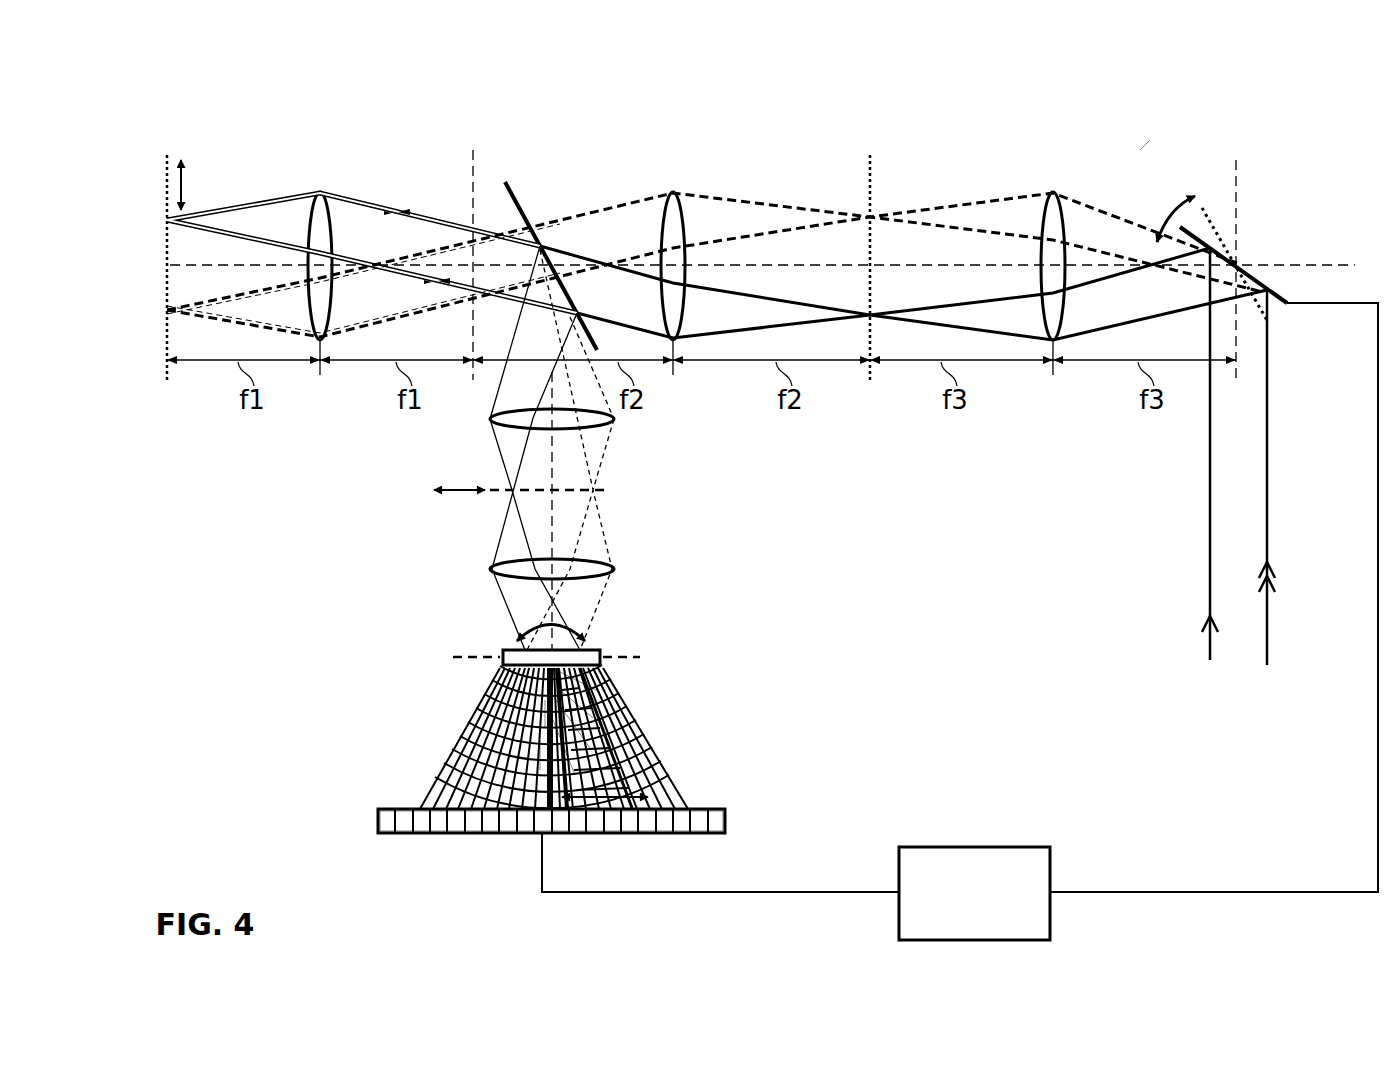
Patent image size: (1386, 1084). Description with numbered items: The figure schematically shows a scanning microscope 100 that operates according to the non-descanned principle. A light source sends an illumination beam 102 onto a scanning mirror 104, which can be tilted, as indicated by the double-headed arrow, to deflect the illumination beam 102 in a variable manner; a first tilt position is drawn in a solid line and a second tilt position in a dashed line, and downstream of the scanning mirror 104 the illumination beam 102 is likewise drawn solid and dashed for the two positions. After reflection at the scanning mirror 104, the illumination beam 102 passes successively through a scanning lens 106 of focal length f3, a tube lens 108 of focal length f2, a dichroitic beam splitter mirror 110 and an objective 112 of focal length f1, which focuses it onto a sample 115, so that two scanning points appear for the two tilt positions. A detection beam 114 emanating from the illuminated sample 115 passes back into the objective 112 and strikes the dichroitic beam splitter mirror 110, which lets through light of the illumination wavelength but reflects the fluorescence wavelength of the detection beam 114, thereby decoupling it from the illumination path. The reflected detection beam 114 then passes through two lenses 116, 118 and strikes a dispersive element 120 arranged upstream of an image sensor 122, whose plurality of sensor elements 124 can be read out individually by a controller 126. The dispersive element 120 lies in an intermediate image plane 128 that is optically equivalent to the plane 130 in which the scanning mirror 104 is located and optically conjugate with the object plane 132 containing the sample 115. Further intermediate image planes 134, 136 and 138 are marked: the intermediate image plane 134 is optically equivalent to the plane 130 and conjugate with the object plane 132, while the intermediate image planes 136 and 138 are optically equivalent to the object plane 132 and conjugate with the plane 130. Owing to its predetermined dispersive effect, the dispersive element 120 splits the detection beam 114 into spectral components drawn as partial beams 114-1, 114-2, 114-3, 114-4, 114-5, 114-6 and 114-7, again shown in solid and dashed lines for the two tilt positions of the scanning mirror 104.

The scanning microscope 100 is at (1148, 140).
The illumination beam 102 is at (1268, 652).
The scanning mirror 104 is at (1285, 298).
The scanning lens 106 is at (1053, 192).
The tube lens 108 is at (673, 192).
The dichroitic beam splitter mirror 110 is at (523, 210).
The objective 112 is at (321, 191).
The detection beam 114 is at (492, 424).
The partial beam 114-1 is at (596, 672).
The partial beam 114-2 is at (600, 692).
The partial beam 114-3 is at (593, 718).
The partial beam 114-4 is at (590, 748).
The partial beam 114-5 is at (575, 775).
The partial beam 114-6 is at (545, 728).
The partial beam 114-7 is at (540, 770).
The sample 115 is at (162, 326).
The lens 116 is at (600, 426).
The lens 118 is at (495, 577).
The dispersive element 120 is at (603, 650).
The image sensor 122 is at (490, 840).
The sensor elements 124 is at (388, 833).
The controller 126 is at (970, 847).
The intermediate image plane 128 is at (640, 657).
The plane 130 is at (1238, 182).
The object plane 132 is at (162, 374).
The intermediate image plane 134 is at (476, 165).
The intermediate image plane 136 is at (872, 180).
The intermediate image plane 138 is at (612, 490).